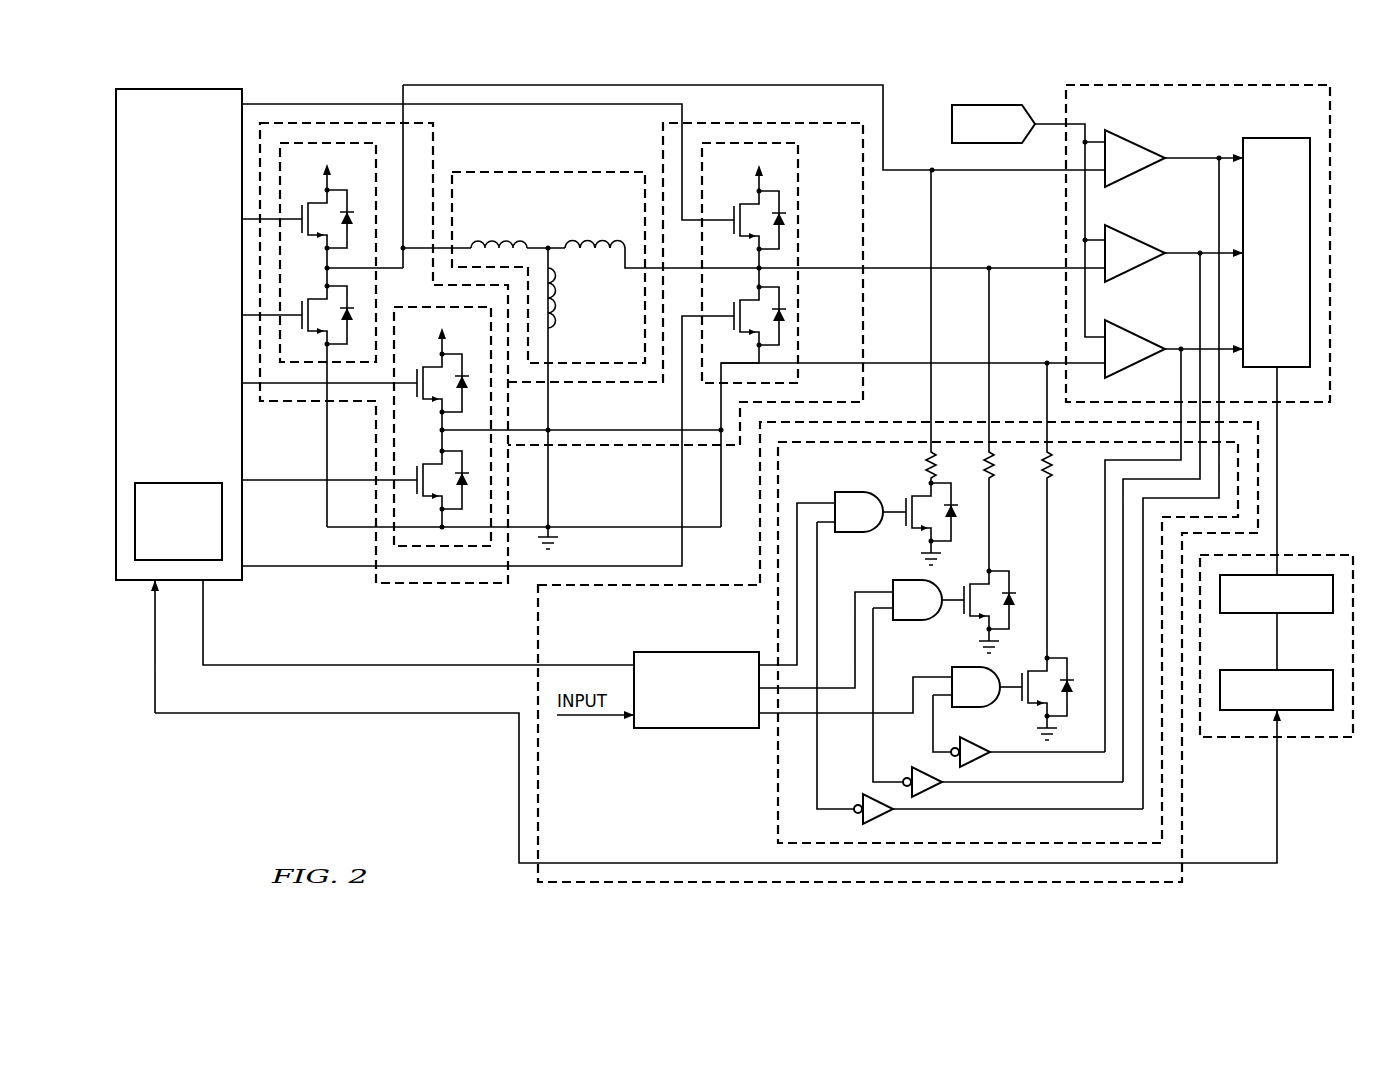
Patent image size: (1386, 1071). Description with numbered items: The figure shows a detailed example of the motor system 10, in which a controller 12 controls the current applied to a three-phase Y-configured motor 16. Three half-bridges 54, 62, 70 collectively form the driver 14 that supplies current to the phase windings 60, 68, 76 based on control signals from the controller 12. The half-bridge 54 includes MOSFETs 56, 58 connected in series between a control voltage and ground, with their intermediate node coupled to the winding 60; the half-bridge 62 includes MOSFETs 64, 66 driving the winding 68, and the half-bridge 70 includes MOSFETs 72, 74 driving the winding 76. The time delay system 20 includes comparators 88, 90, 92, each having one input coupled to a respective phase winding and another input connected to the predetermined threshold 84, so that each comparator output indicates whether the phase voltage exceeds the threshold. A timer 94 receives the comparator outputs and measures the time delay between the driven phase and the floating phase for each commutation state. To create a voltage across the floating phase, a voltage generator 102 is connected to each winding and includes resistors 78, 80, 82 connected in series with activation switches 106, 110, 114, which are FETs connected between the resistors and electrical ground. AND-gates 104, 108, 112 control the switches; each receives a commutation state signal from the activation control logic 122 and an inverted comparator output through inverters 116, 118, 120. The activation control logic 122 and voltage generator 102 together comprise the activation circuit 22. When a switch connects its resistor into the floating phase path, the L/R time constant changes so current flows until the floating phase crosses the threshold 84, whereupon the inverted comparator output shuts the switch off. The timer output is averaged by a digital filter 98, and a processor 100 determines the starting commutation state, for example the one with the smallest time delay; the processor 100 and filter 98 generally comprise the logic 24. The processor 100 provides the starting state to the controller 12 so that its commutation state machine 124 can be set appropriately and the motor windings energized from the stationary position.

The motor system 10 is at (314, 755).
The controller 12 is at (190, 304).
The driver 14 is at (412, 590).
The motor 16 is at (526, 169).
The time delay system 20 is at (1059, 217).
The activation circuit 22 is at (531, 628).
The logic 24 is at (1316, 747).
The half-bridge 54 is at (298, 372).
The MOSFET 56 is at (318, 201).
The MOSFET 58 is at (318, 297).
The winding 60 is at (494, 240).
The half-bridge 62 is at (497, 482).
The MOSFET 64 is at (428, 364).
The MOSFET 66 is at (428, 460).
The winding 68 is at (567, 291).
The half-bridge 70 is at (804, 195).
The MOSFET 72 is at (750, 202).
The MOSFET 74 is at (748, 292).
The winding 76 is at (590, 240).
The resistor 78 is at (927, 462).
The resistor 80 is at (999, 472).
The resistor 82 is at (1057, 472).
The predetermined threshold 84 is at (950, 124).
The comparator 88 is at (1141, 133).
The comparator 90 is at (1137, 234).
The comparator 92 is at (1137, 330).
The timer 94 is at (1265, 294).
The digital filter 98 is at (1305, 614).
The processor 100 is at (1250, 670).
The voltage generator 102 is at (771, 771).
The AND-gate 104 is at (861, 533).
The activation switch 106 is at (948, 485).
The AND-gate 108 is at (919, 621).
The activation switch 110 is at (998, 570).
The AND-gate 112 is at (966, 667).
The activation switch 114 is at (1052, 657).
The inverter 116 is at (991, 761).
The inverter 118 is at (943, 791).
The inverter 120 is at (894, 816).
The activation control logic 122 is at (668, 729).
The commutation state machine 124 is at (170, 483).